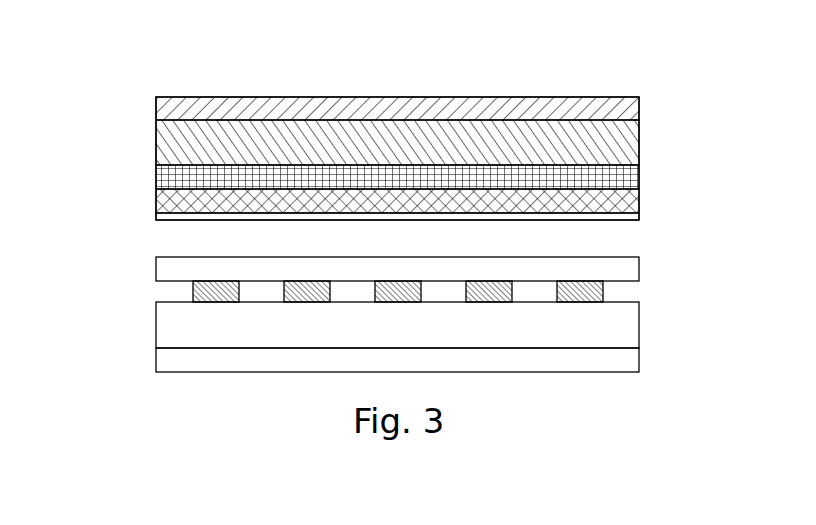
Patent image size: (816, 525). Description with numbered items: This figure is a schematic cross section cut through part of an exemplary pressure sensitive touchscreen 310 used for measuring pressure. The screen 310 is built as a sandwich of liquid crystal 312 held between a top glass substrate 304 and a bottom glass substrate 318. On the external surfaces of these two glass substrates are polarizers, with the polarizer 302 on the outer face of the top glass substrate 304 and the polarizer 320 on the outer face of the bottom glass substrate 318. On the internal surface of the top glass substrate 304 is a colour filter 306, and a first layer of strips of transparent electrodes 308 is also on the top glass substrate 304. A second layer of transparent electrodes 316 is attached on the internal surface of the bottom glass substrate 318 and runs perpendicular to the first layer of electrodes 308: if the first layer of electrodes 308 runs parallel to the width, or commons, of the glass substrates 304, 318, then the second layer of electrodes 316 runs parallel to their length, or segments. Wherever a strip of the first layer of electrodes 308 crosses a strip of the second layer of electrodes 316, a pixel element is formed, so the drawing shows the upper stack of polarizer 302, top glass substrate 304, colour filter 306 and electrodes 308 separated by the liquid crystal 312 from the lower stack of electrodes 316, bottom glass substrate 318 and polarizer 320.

The pressure sensitive touchscreen 310 is at (133, 76).
The polarizer 302 is at (156, 110).
The top glass substrate 304 is at (156, 143).
The colour filter 306 is at (156, 180).
The first layer of strips of transparent electrodes 308 is at (156, 203).
The liquid crystal 312 is at (593, 233).
The second layer of transparent electrodes 316 is at (603, 289).
The bottom glass substrate 318 is at (156, 327).
The polarizer 320 is at (156, 360).